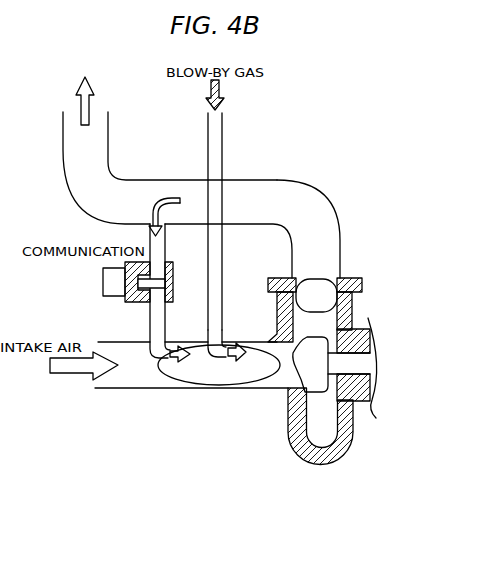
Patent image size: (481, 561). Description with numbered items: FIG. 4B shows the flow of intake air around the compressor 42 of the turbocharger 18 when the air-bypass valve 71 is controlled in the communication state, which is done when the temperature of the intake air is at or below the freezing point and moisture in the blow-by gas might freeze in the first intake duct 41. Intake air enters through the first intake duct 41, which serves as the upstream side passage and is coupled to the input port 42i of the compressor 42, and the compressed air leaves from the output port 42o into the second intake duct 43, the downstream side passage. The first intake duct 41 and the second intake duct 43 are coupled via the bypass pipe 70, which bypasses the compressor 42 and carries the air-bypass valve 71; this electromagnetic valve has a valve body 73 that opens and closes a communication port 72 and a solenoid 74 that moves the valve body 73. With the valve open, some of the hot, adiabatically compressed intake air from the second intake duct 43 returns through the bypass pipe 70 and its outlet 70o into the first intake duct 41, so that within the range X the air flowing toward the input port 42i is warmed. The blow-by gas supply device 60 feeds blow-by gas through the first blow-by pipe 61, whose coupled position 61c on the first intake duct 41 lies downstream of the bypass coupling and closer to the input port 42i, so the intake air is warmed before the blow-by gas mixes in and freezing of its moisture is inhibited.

The turbocharger 18 is at (367, 306).
The first intake duct 41 is at (178, 392).
The compressor 42 is at (297, 353).
The input port 42i is at (268, 342).
The output port 42o is at (318, 278).
The second intake duct 43 is at (172, 178).
The blow-by gas supply device 60 is at (327, 161).
The first blow-by pipe 61 is at (224, 270).
The coupled position 61c is at (208, 349).
The bypass pipe 70 is at (168, 258).
The communication passage outlet 70o is at (149, 353).
The air-bypass valve 71 is at (122, 286).
The communication port 72 is at (173, 288).
The valve body 73 is at (120, 292).
The solenoid 74 is at (102, 279).
The range X is at (230, 388).